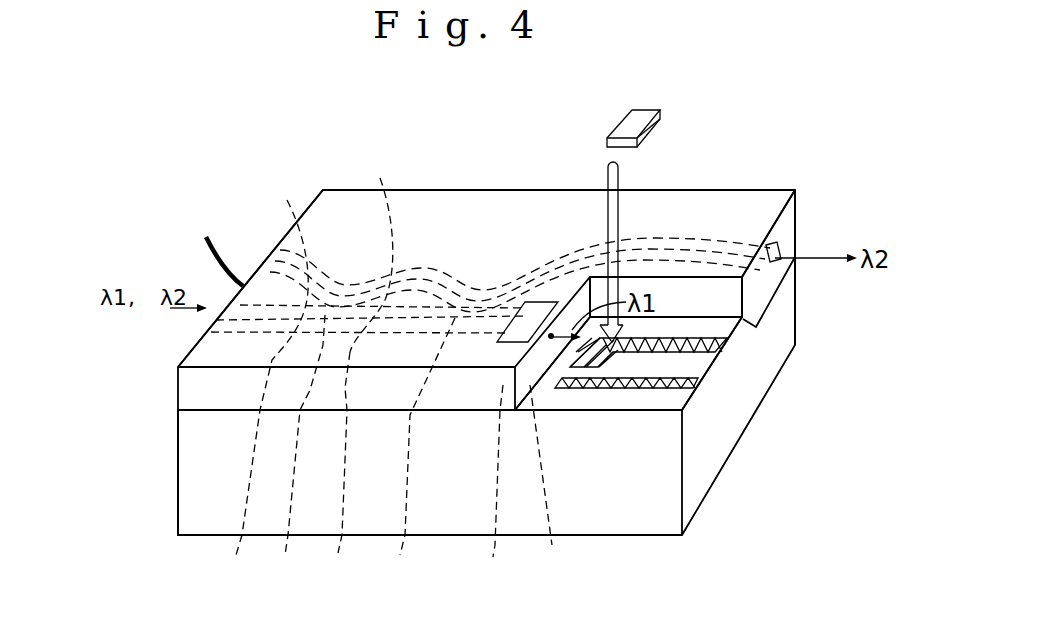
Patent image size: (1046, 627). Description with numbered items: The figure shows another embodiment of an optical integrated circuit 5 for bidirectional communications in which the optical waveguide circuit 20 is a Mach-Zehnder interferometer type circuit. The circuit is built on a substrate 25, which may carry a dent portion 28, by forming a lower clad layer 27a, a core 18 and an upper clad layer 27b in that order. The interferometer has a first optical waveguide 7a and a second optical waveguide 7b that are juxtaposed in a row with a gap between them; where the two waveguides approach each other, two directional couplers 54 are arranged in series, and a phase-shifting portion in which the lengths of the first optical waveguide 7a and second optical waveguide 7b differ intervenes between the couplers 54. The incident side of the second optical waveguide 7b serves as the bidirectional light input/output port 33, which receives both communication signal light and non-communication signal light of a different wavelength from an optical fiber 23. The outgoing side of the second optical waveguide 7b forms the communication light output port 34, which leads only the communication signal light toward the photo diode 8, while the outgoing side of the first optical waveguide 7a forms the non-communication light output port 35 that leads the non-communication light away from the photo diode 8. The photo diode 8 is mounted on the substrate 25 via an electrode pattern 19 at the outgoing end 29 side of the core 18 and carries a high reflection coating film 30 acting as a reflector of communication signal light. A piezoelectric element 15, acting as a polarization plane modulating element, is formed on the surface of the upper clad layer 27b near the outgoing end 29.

The optical waveguide device 5 is at (780, 122).
The photo diode 8 is at (642, 116).
The high reflection coating film 30 is at (655, 128).
The optical waveguide circuit 20 is at (455, 212).
The substrate 25 is at (630, 517).
The bidirectional light input/output port 33 is at (178, 410).
The dent portion 28 is at (712, 327).
The non-communication light output port 35 is at (738, 244).
The lower clad layer 27a is at (793, 252).
The upper clad layer 27b is at (792, 213).
The optical fiber 23 is at (206, 244).
The core 18 is at (260, 377).
The first optical waveguide 7a is at (379, 249).
The second optical waveguide 7b is at (343, 468).
The directional coupler 54 is at (358, 461).
The piezoelectric element 15 is at (497, 342).
The outgoing end 29 is at (496, 496).
The communication light output port 34 is at (548, 485).
The electrode pattern 19 is at (695, 348).